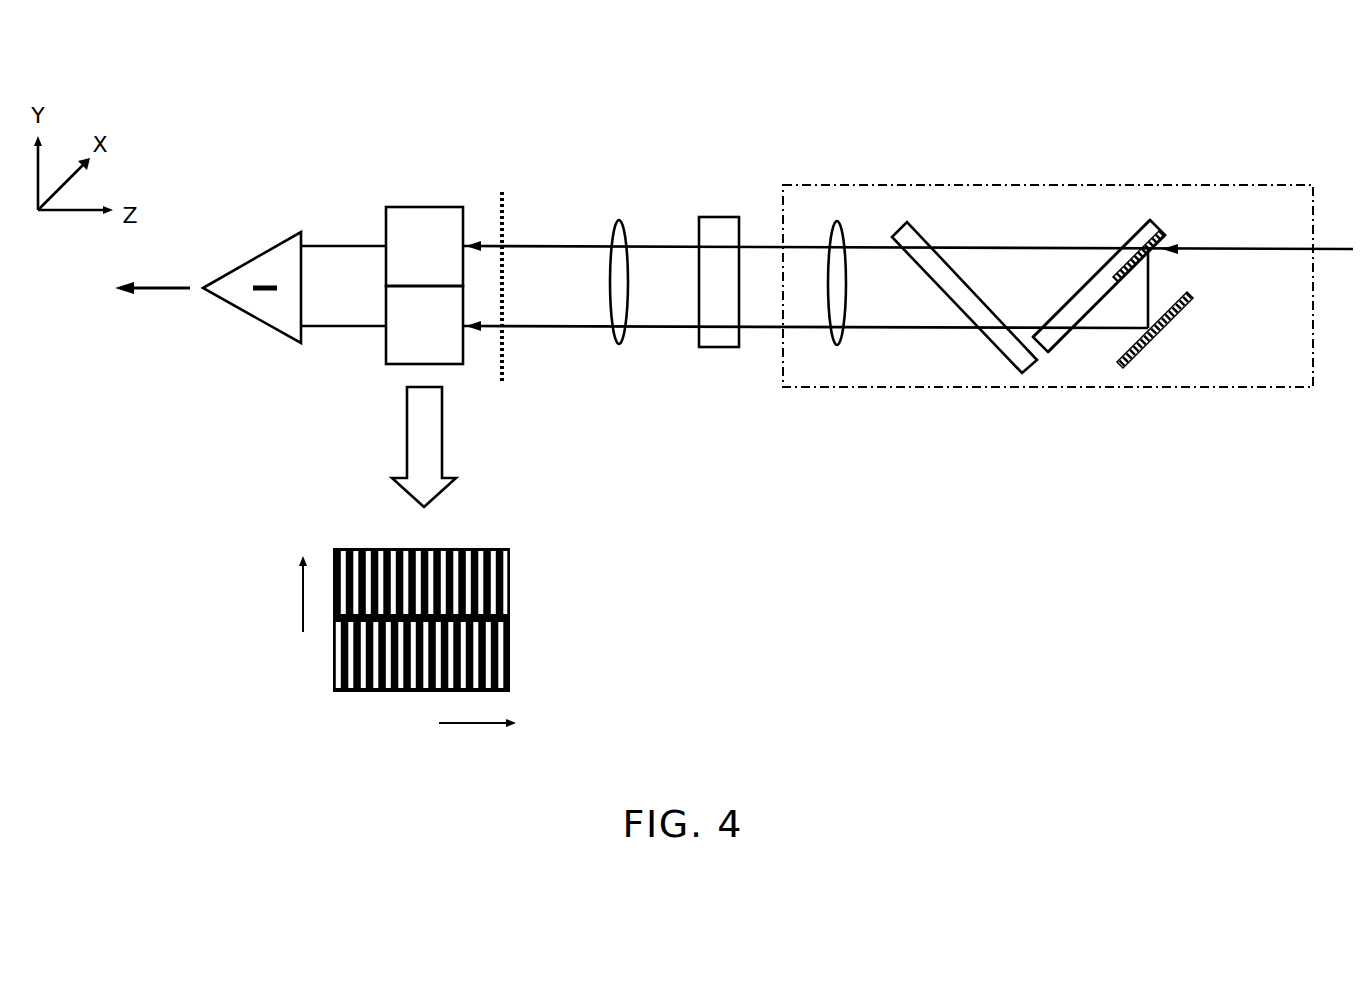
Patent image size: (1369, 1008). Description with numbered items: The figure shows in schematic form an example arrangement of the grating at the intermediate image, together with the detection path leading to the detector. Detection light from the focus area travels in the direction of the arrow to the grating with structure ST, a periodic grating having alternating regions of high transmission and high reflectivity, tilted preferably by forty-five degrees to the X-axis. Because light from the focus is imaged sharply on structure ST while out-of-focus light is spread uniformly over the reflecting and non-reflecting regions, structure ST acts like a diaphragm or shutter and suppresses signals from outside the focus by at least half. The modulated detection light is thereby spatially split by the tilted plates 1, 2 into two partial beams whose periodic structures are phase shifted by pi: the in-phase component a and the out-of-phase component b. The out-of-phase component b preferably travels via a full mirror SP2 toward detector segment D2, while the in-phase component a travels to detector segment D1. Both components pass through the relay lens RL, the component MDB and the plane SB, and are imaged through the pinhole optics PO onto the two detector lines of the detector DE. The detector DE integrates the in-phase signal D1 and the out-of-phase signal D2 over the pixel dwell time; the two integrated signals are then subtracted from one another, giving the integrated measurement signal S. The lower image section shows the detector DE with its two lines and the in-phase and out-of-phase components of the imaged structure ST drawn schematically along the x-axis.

The integrated measurement signal S is at (152, 303).
The detector segment D1 is at (343, 233).
The detector segment D2 is at (343, 309).
The detector DE is at (504, 452).
The aperture / shutter plane SB is at (503, 269).
The pinhole optics PO is at (623, 266).
The MDB component MDB is at (720, 304).
The relay lens RL is at (823, 248).
The structure ST is at (908, 269).
The first beam splitter plate 1 is at (1099, 286).
The second beam splitter plate 2 is at (964, 287).
The in-phase component a is at (1091, 278).
The out-of-phase component b is at (1106, 302).
The full mirror SP2 is at (1212, 332).